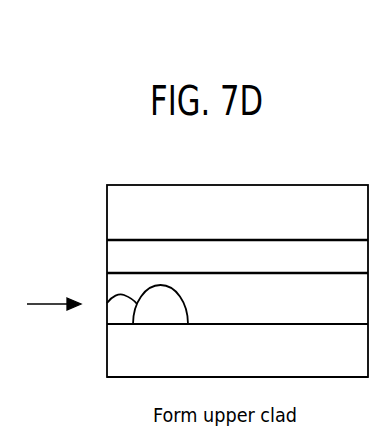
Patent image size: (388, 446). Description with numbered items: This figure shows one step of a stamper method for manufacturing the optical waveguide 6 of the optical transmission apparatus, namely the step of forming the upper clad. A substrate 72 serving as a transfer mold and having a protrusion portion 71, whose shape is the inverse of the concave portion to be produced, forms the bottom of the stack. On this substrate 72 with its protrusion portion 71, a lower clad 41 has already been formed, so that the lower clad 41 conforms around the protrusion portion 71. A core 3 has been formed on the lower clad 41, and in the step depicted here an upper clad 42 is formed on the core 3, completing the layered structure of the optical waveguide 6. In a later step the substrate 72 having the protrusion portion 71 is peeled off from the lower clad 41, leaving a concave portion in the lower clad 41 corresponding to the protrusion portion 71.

The optical waveguide 6 is at (159, 173).
The upper clad 42 is at (258, 185).
The core 3 is at (107, 252).
The lower clad 41 is at (107, 291).
The protrusion portion 71 is at (107, 302).
The substrate 72 is at (138, 377).